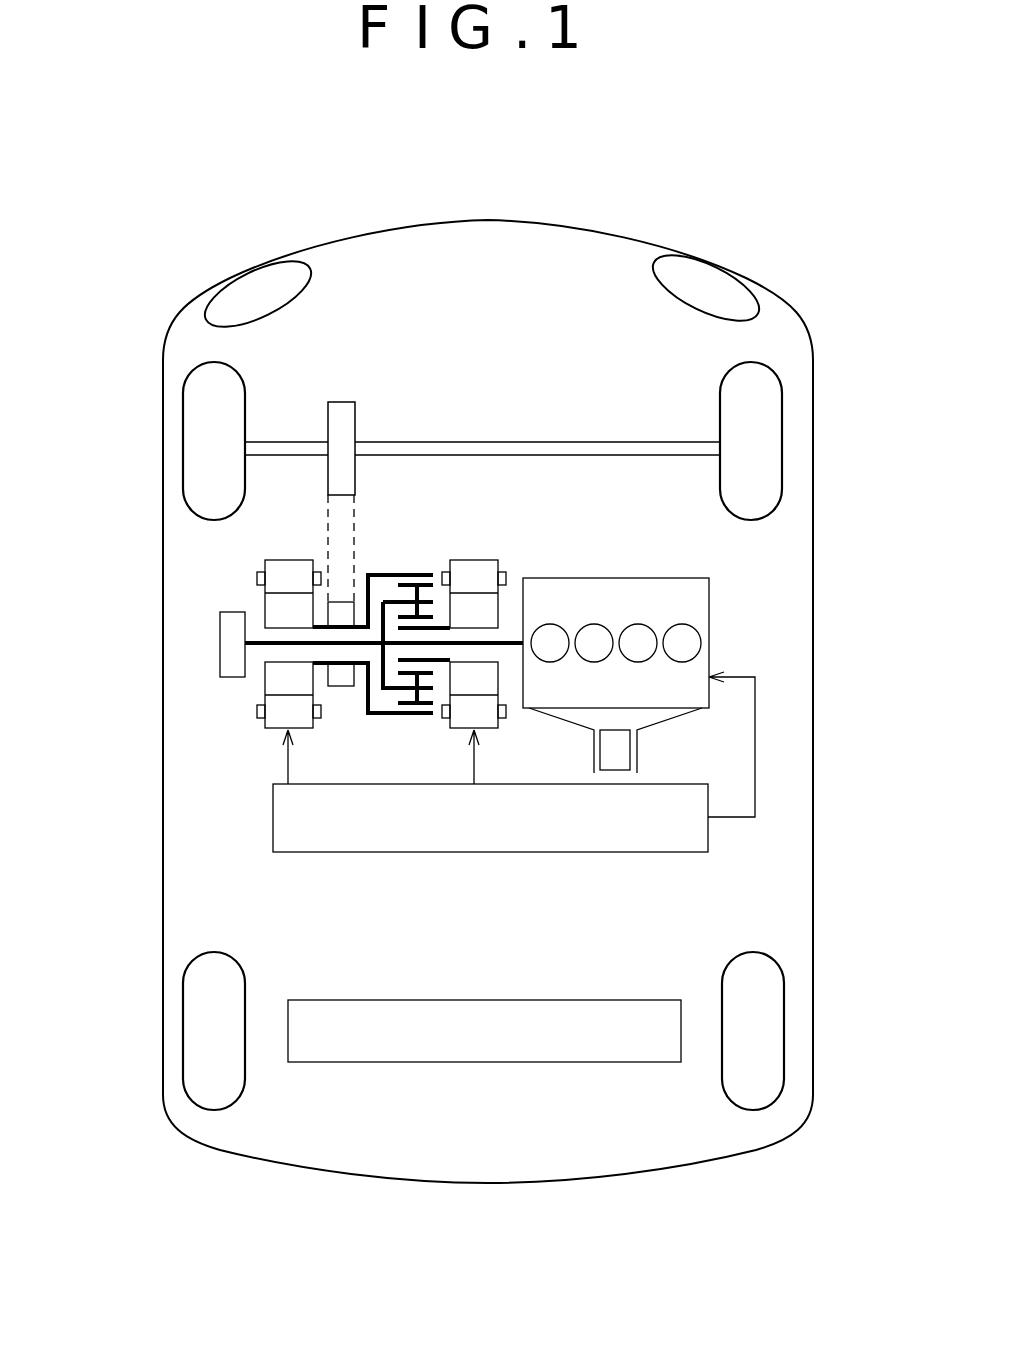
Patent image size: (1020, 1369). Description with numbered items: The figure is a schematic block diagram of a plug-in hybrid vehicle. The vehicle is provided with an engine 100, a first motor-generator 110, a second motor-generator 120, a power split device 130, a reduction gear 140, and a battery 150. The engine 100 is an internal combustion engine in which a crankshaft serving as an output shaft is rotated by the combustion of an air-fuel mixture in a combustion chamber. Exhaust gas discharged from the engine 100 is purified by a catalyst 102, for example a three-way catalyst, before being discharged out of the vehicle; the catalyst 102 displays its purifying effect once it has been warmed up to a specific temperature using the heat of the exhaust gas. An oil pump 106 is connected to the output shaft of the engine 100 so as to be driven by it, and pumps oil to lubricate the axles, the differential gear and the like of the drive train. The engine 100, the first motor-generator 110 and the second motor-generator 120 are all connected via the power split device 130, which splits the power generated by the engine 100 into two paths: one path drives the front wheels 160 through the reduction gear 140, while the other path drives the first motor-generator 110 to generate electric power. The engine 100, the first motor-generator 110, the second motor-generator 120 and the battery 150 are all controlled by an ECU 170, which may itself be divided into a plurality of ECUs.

The engine 100 is at (565, 578).
The catalyst 102 is at (615, 730).
The oil pump 106 is at (220, 655).
The first motor-generator 110 is at (477, 560).
The second motor-generator 120 is at (265, 565).
The power split device 130 is at (403, 573).
The reduction gear 140 is at (357, 377).
The battery 150 is at (453, 1062).
The front wheels 160 is at (183, 453).
The ECU 170 is at (273, 823).